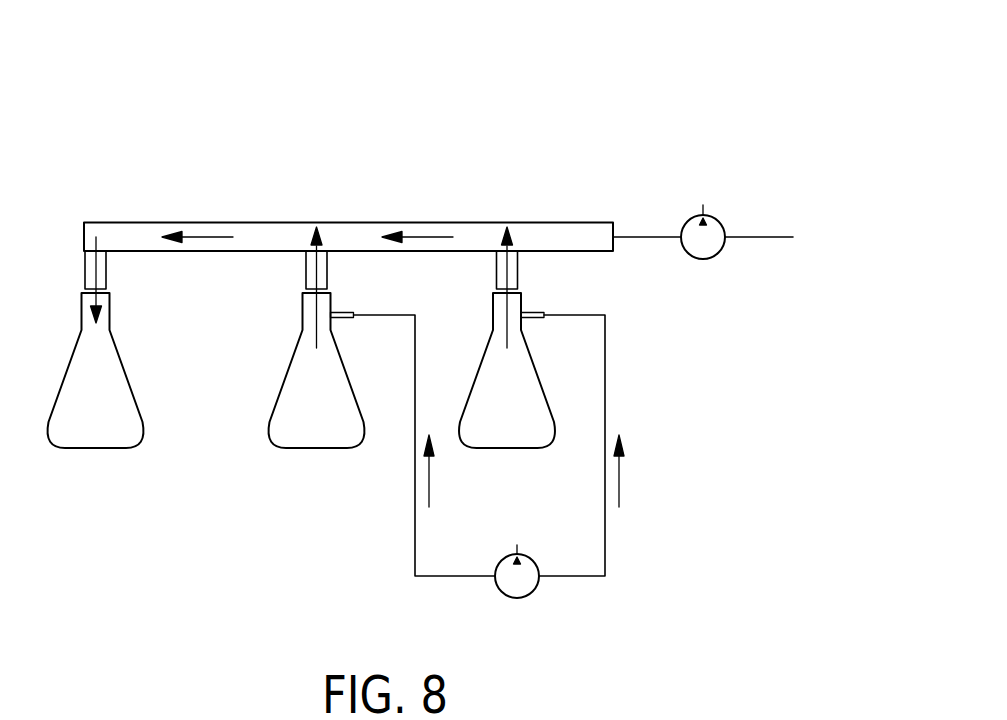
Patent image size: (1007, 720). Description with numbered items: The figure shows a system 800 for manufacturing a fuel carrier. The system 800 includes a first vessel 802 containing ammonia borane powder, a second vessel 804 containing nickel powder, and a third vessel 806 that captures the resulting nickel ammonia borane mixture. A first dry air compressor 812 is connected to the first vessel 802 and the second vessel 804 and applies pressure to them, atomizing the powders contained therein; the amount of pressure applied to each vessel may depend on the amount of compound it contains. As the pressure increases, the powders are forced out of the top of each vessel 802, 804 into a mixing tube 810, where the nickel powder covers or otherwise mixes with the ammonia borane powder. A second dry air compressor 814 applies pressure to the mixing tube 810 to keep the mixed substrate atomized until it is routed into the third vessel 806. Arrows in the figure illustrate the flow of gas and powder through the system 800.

The system 800 is at (702, 62).
The first vessel 802 is at (490, 345).
The second vessel 804 is at (300, 345).
The third vessel 806 is at (78, 345).
The mixing tube 810 is at (365, 222).
The first dry air compressor 812 is at (533, 591).
The second dry air compressor 814 is at (720, 251).